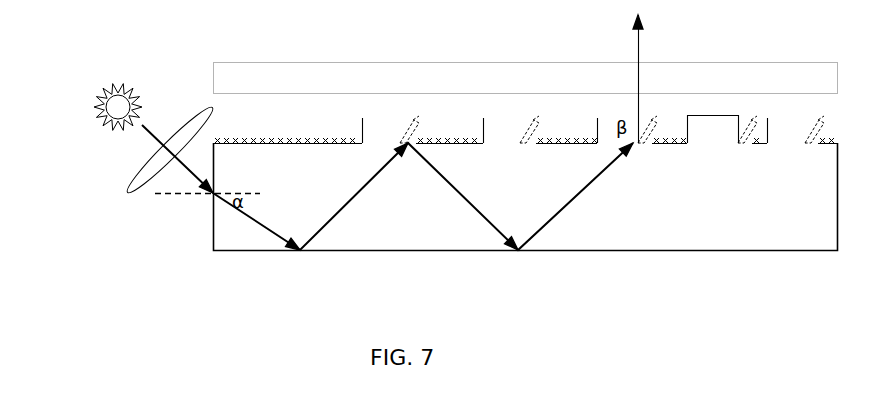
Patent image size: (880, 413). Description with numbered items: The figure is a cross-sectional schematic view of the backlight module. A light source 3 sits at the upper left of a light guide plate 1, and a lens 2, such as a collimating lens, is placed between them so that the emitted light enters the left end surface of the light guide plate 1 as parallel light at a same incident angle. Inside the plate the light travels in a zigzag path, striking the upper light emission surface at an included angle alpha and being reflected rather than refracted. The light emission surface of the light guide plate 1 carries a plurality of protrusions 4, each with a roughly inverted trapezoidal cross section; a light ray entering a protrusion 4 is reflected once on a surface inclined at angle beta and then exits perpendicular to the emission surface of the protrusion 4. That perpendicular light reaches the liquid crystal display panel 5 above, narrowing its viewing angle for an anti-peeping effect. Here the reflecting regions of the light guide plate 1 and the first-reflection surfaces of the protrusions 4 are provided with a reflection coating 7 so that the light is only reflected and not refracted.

The light guide plate 1 is at (300, 155).
The lens 2 is at (190, 120).
The light source 3 is at (106, 88).
The protrusions 4 is at (372, 130).
The liquid crystal display panel 5 is at (432, 85).
The reflection coating 7 is at (585, 140).